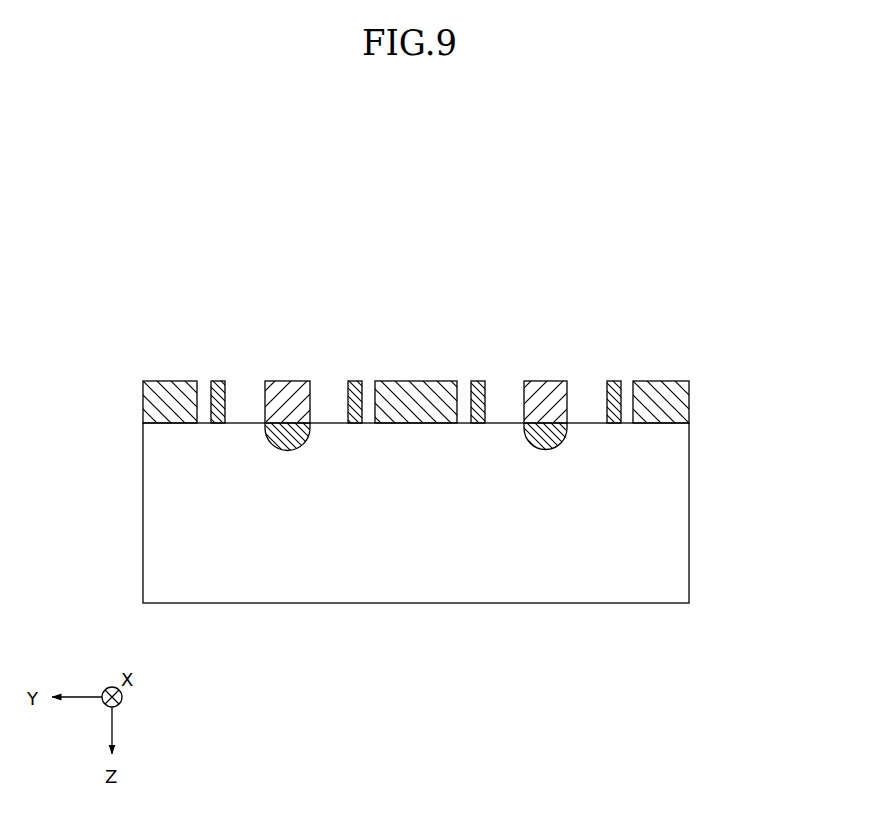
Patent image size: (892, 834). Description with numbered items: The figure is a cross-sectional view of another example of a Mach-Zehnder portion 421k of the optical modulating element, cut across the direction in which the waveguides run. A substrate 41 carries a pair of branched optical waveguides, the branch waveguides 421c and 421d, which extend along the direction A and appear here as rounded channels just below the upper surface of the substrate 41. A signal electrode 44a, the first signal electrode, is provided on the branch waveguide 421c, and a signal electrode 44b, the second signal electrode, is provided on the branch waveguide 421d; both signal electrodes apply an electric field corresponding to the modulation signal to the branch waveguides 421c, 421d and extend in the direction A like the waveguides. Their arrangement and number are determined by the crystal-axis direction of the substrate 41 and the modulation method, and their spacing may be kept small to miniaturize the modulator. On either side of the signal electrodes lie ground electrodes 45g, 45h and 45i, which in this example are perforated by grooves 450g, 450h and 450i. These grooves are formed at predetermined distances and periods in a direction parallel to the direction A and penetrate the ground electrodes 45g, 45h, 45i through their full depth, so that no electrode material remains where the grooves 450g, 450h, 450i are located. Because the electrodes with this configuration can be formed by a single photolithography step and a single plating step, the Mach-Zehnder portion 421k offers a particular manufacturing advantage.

The Mach-Zehnder portion 421k is at (740, 250).
The substrate 41 is at (670, 517).
The groove 450i is at (204, 393).
The ground electrode 45i is at (233, 397).
The signal electrode 44b is at (300, 395).
The branch waveguide 421d is at (303, 443).
The groove 450g is at (462, 389).
The ground electrode 45g is at (497, 396).
The signal electrode 44a is at (557, 395).
The branch waveguide 421c is at (562, 440).
The groove 450h is at (630, 392).
The ground electrode 45h is at (733, 390).